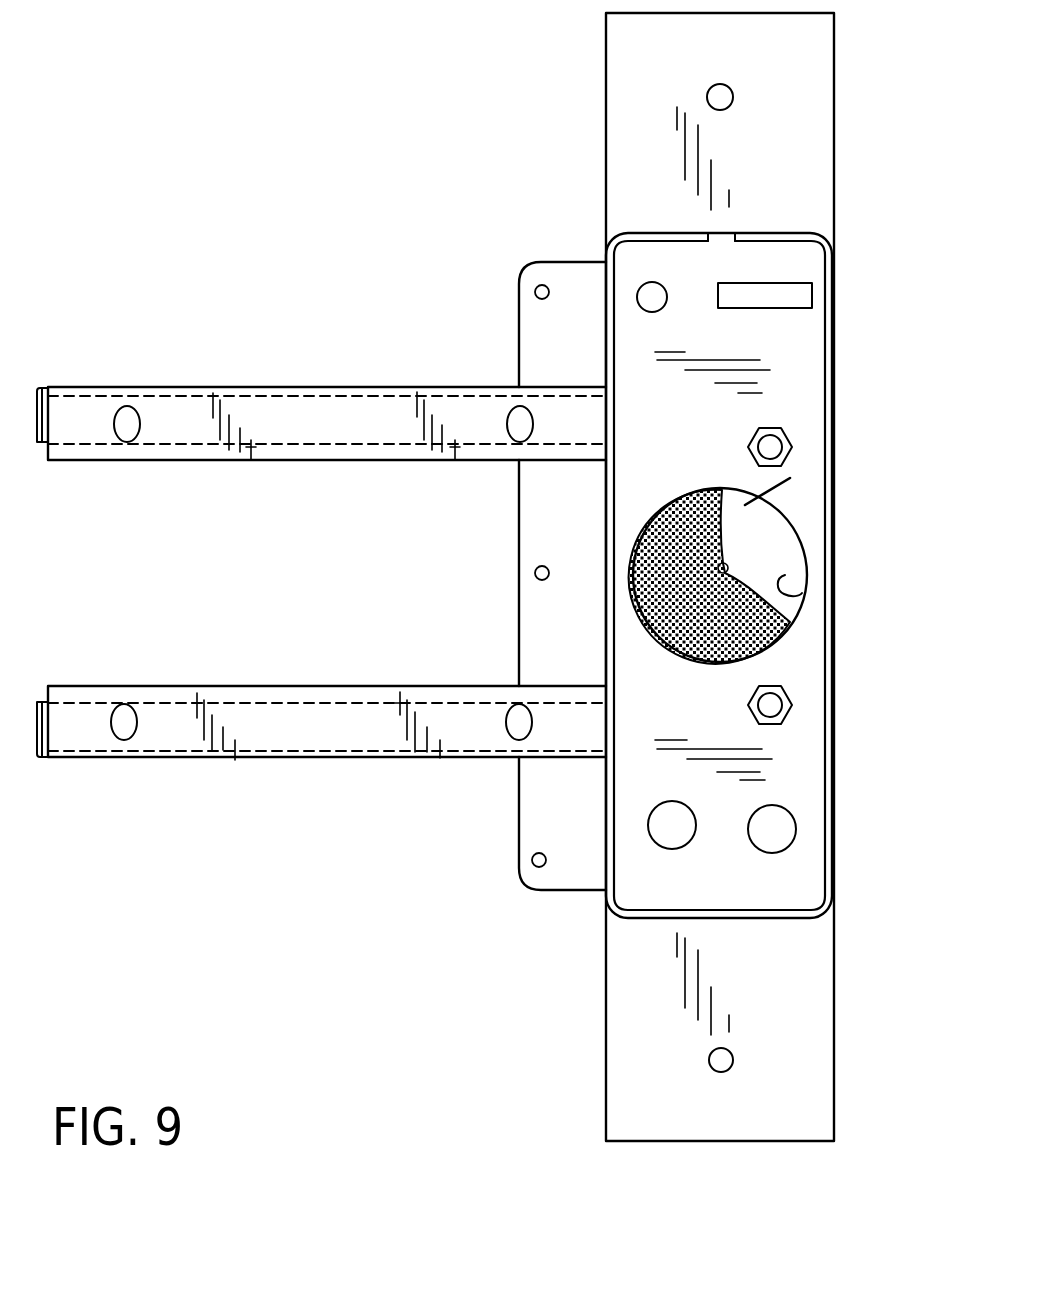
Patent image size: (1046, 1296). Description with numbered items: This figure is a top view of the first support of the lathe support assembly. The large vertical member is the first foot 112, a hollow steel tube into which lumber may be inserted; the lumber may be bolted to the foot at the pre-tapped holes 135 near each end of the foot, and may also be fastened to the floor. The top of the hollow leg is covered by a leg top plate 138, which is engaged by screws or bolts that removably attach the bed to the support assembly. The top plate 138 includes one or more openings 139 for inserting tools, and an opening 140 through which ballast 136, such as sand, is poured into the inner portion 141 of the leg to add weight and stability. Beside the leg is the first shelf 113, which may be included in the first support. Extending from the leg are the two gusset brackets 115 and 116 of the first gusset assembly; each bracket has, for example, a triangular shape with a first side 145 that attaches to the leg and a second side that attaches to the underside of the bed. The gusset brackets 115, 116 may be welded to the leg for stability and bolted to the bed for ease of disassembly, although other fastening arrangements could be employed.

The first foot 112 is at (630, 1118).
The first shelf 113 is at (558, 870).
The gusset bracket 115 is at (273, 743).
The gusset bracket 116 is at (200, 452).
The pre-tapped holes 135 is at (731, 93).
The ballast material 136 is at (725, 563).
The second leg top plate 138 is at (797, 660).
The openings 139 is at (795, 293).
The opening 140 is at (785, 575).
The inner portion 141 is at (745, 505).
The first side 145 is at (322, 430).